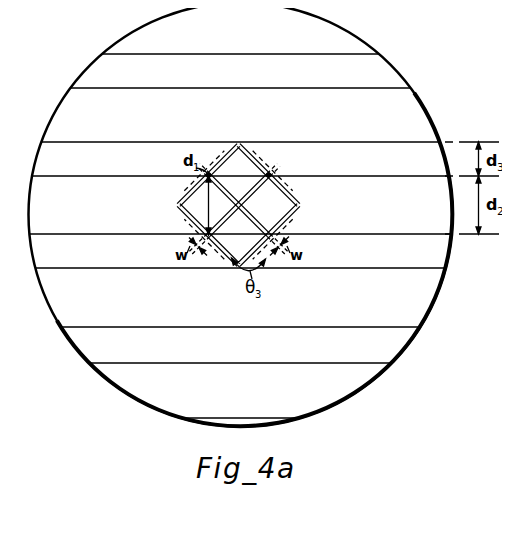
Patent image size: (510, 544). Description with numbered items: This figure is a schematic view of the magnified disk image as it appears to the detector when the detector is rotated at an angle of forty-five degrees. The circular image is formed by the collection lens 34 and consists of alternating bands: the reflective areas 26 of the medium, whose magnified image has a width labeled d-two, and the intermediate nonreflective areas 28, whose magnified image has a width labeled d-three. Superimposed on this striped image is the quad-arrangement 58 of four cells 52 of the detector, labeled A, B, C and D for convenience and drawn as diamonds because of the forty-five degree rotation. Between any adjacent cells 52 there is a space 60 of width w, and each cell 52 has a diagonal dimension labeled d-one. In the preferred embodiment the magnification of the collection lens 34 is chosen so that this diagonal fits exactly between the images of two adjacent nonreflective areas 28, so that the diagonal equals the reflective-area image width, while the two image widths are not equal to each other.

The reflective areas 26 is at (142, 35).
The nonreflective areas 28 is at (142, 71).
The collection lens 34 is at (417, 100).
The cells 52 is at (178, 191).
The quad-arrangement 58 is at (222, 145).
The space 60 is at (202, 166).